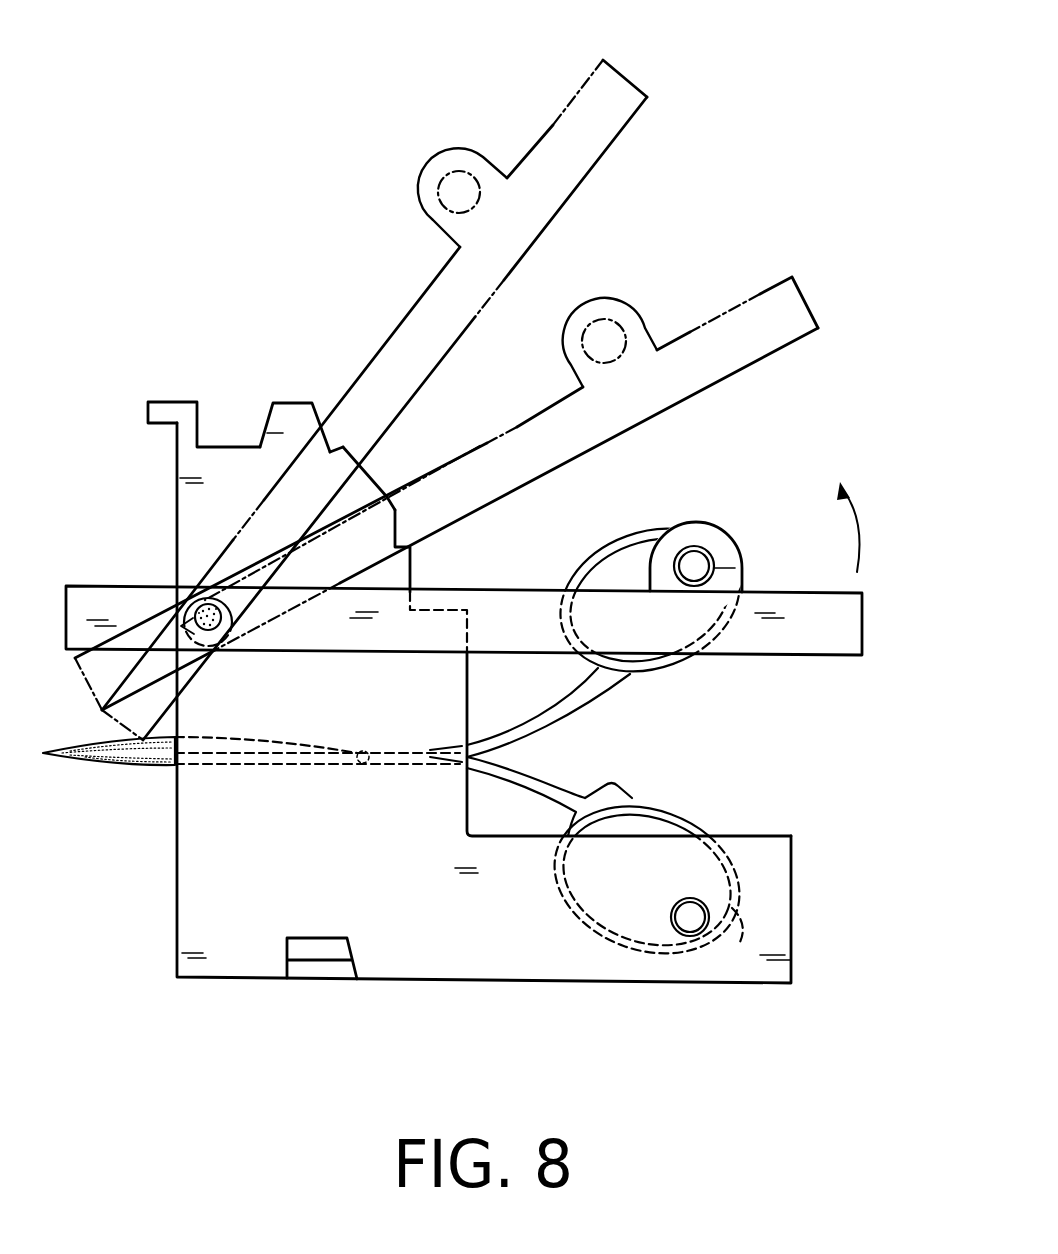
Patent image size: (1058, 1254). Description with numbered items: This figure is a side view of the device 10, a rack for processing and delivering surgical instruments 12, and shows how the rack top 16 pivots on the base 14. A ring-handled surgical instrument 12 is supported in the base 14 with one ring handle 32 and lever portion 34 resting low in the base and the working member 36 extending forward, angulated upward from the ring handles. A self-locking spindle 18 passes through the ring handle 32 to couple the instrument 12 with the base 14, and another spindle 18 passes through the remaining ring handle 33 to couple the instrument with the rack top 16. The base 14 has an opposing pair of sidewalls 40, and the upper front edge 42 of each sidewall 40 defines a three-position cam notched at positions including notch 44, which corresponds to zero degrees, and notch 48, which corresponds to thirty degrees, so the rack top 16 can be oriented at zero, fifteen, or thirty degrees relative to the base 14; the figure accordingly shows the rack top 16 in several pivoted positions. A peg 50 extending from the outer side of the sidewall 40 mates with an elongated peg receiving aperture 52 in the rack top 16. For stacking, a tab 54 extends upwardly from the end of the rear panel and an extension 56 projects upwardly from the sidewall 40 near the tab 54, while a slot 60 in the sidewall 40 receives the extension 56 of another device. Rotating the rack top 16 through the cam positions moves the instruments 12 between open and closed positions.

The device 10 is at (236, 215).
The surgical instrument 12 is at (401, 734).
The base 14 is at (188, 857).
The rack top 16 is at (613, 107).
The spindle 18 is at (694, 556).
The ring handle 32 is at (670, 790).
The remaining ring handle 33 is at (620, 548).
The lever portion 34 is at (212, 755).
The working member 36 is at (105, 763).
The sidewall 40 is at (404, 545).
The upper front edge 42 is at (385, 468).
The notched position 44 is at (445, 608).
The notched position 48 is at (337, 432).
The peg 50 is at (193, 603).
The peg receiving aperture 52 is at (168, 611).
The tab 54 is at (154, 410).
The extension 56 is at (292, 418).
The slot 60 is at (330, 950).